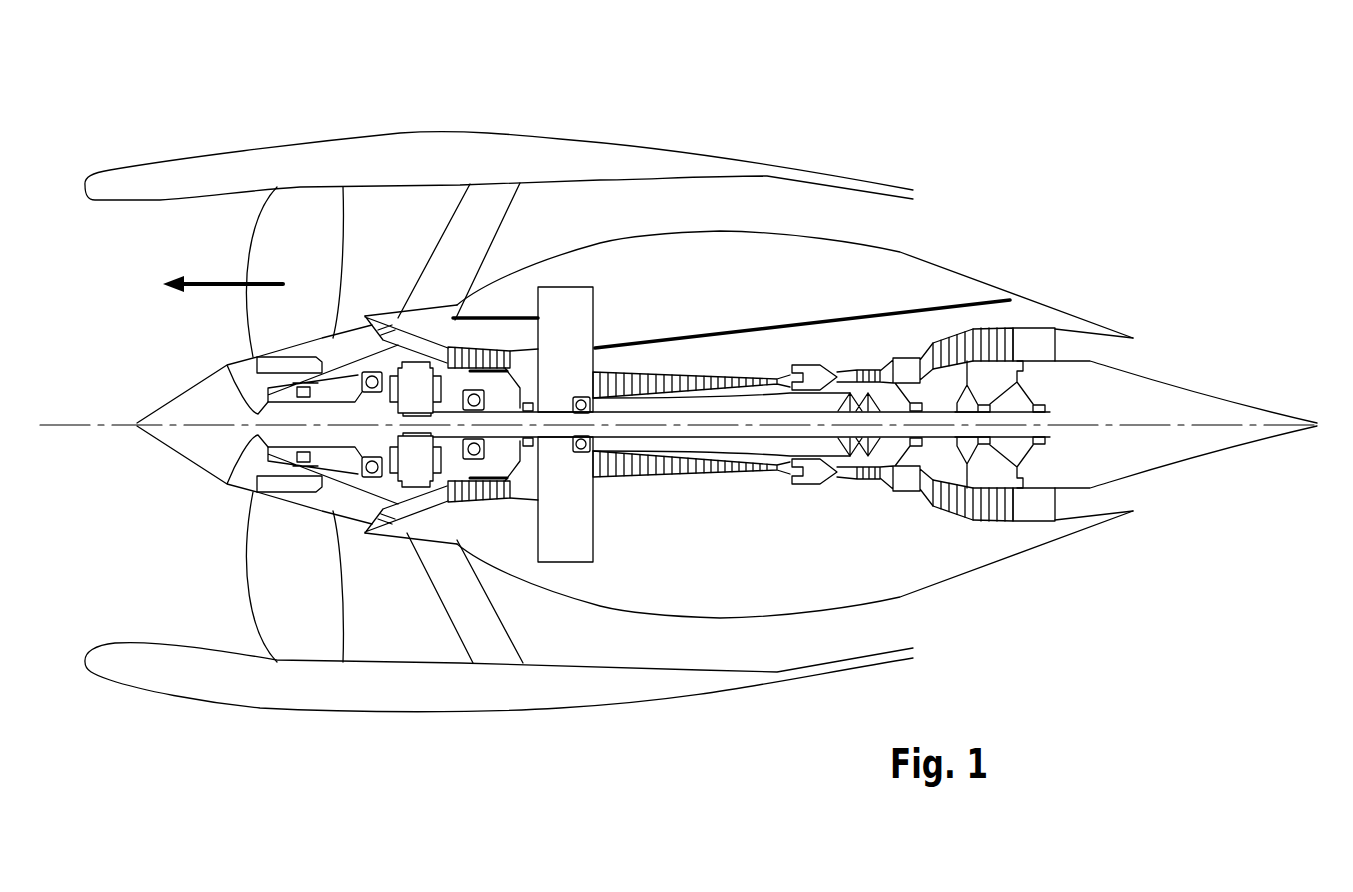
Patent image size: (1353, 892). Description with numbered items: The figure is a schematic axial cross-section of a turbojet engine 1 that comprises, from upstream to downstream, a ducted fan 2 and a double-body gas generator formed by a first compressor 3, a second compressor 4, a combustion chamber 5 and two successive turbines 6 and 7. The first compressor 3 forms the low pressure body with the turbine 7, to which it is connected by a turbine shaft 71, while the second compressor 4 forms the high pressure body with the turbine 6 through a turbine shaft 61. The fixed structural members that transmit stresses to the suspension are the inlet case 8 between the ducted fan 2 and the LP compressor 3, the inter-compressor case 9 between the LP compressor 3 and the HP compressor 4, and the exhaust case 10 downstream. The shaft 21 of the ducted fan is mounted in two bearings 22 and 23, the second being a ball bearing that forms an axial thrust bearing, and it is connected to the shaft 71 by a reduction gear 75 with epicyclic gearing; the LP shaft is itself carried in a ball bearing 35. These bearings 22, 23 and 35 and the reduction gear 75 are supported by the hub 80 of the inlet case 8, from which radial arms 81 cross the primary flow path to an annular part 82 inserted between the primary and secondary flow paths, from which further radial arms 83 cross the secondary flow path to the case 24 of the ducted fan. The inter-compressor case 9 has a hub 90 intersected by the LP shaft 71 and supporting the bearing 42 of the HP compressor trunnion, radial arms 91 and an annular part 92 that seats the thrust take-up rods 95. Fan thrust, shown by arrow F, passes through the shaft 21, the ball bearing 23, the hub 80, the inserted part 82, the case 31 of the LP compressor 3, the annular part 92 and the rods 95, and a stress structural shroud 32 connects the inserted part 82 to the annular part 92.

The turbojet engine 1 is at (1122, 552).
The ducted fan 2 is at (298, 208).
The first compressor 3 is at (498, 350).
The second compressor 4 is at (700, 376).
The combustion chamber 5 is at (817, 368).
The turbine 6 is at (858, 372).
The turbine 7 is at (982, 337).
The inlet case 8 is at (412, 250).
The inter-compressor case 9 is at (575, 262).
The exhaust case 10 is at (1033, 340).
The shaft of the ducted fan 21 is at (213, 385).
The bearing 22 is at (262, 436).
The bearing 23 is at (350, 477).
The case of the ducted fan 24 is at (233, 167).
The case of the LP compressor 31 is at (548, 352).
The stress structural shroud 32 is at (483, 355).
The ball bearing 35 is at (490, 490).
The bearing 42 is at (568, 465).
The turbine shaft 61 is at (820, 483).
The turbine shaft 71 is at (917, 480).
The reduction gear 75 is at (412, 463).
The hub of the inlet case 80 is at (295, 347).
The radial arms 81 is at (352, 328).
The annular part 82 is at (426, 312).
The radial arms 83 is at (457, 267).
The hub 90 is at (660, 376).
The radial arms 91 is at (590, 360).
The annular part 92 is at (562, 287).
The thrust take-up rods 95 is at (786, 325).